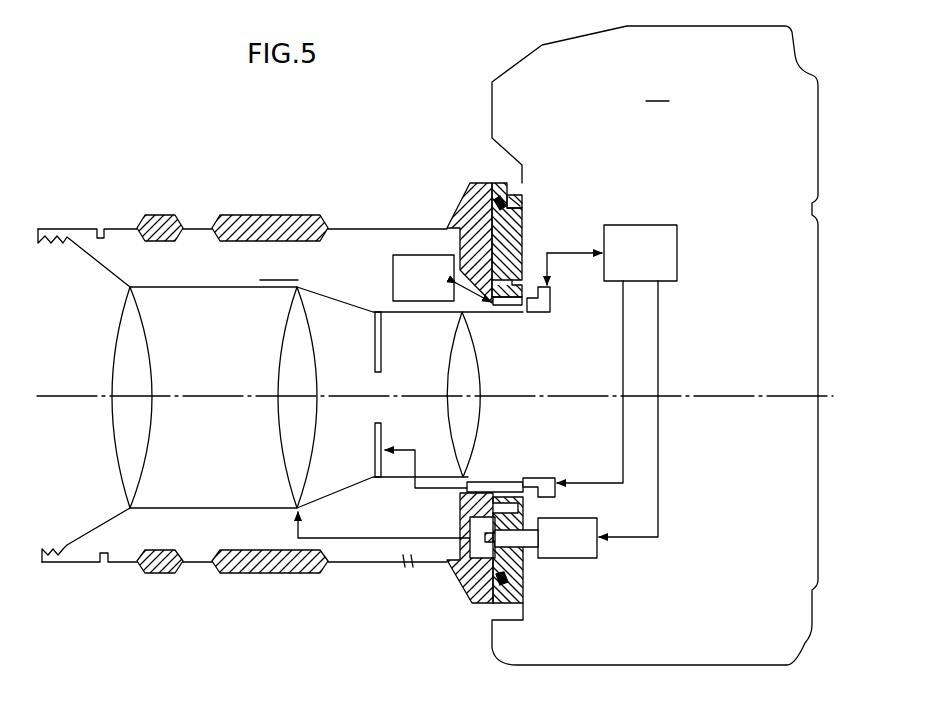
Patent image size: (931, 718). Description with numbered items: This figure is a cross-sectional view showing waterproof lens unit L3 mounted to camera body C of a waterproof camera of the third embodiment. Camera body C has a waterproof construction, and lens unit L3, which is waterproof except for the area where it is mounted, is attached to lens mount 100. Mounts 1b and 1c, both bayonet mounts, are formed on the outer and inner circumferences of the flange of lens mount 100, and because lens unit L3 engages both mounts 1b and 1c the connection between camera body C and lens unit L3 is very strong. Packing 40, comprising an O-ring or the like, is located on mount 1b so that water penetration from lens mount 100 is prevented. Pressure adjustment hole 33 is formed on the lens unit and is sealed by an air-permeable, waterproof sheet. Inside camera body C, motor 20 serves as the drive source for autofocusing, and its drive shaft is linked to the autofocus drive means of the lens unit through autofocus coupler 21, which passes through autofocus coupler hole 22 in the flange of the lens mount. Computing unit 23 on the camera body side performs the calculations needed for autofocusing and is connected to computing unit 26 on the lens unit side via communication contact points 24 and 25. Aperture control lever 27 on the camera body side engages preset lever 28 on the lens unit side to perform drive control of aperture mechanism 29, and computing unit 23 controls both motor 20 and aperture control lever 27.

The mount 1b is at (522, 192).
The mount 1c is at (502, 313).
The lens mount 100 is at (521, 245).
The motor 20 is at (580, 545).
The autofocus coupler 21 is at (523, 533).
The autofocus coupler hole 22 is at (523, 577).
The computing unit 23 is at (677, 252).
The communication contact point 24 is at (550, 298).
The communication contact point 25 is at (518, 306).
The computing unit 26 is at (393, 277).
The aperture control lever 27 is at (537, 478).
The preset lever 28 is at (492, 482).
The aperture mechanism 29 is at (375, 337).
The pressure adjustment hole 33 is at (403, 563).
The packing 40 is at (496, 200).
The waterproof lens unit L3 is at (279, 265).
The camera body C is at (655, 345).